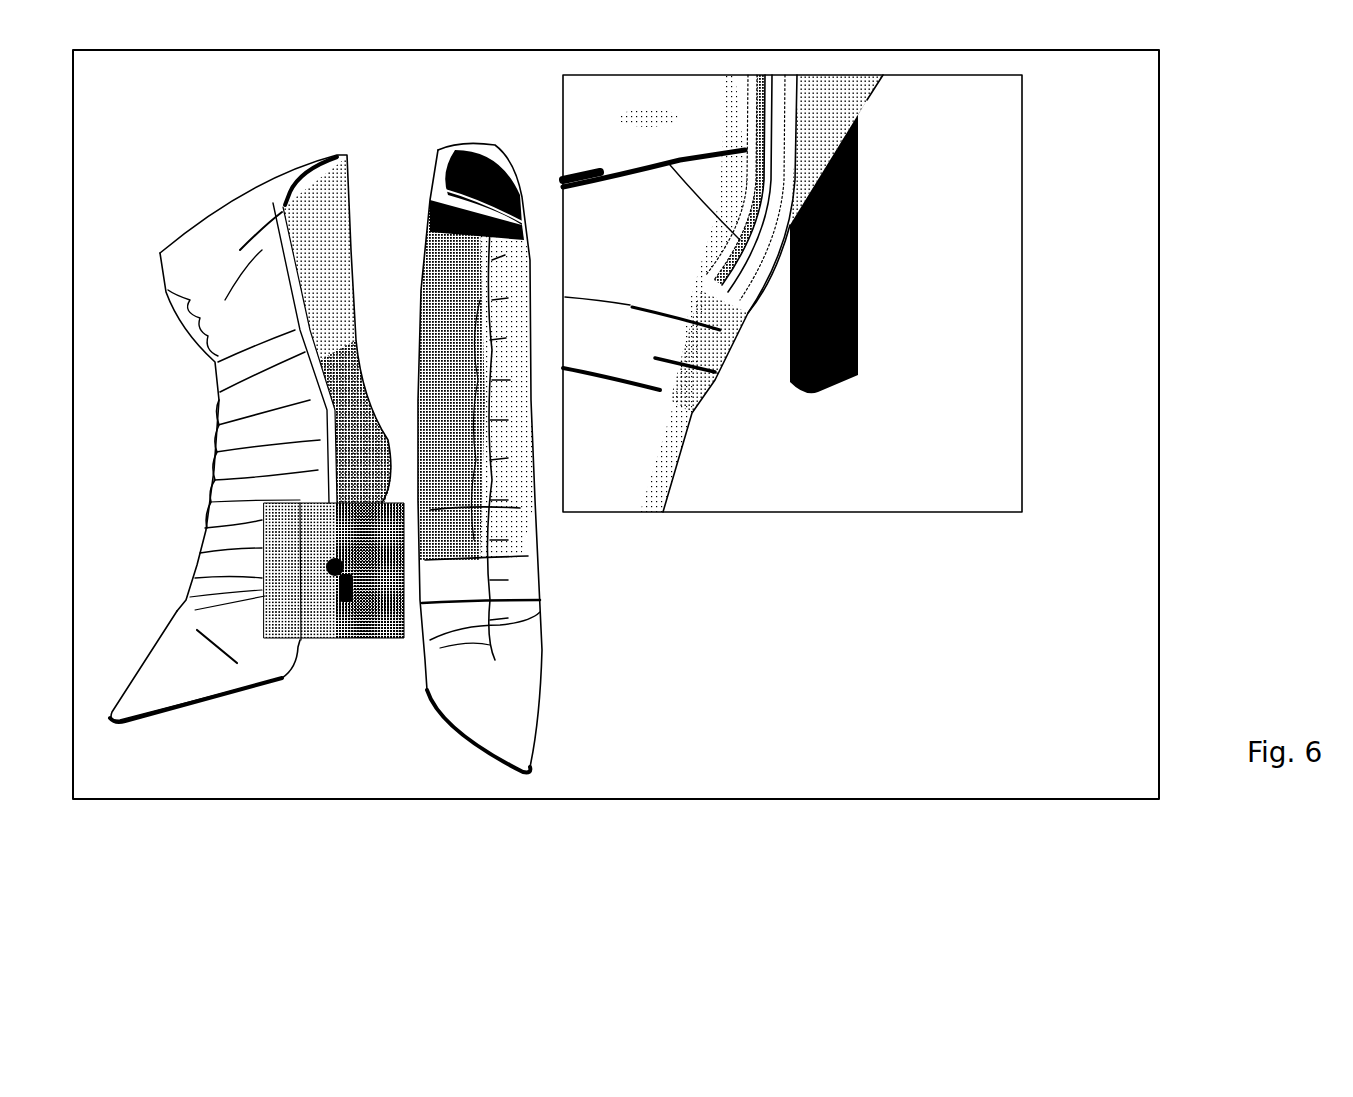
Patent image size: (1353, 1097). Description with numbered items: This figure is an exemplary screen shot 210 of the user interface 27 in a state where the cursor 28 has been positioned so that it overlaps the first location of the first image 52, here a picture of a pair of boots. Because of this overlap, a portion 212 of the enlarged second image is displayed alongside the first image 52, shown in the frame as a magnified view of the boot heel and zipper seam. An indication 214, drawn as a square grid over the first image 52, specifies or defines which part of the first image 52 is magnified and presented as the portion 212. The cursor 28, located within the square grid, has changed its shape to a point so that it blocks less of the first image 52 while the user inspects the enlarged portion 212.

The screen shot 210 is at (1159, 210).
The user interface 27 is at (1090, 638).
The first image 52 is at (252, 737).
The indication 214 is at (333, 640).
The cursor 28 is at (348, 604).
The portion of the second image 212 is at (755, 512).